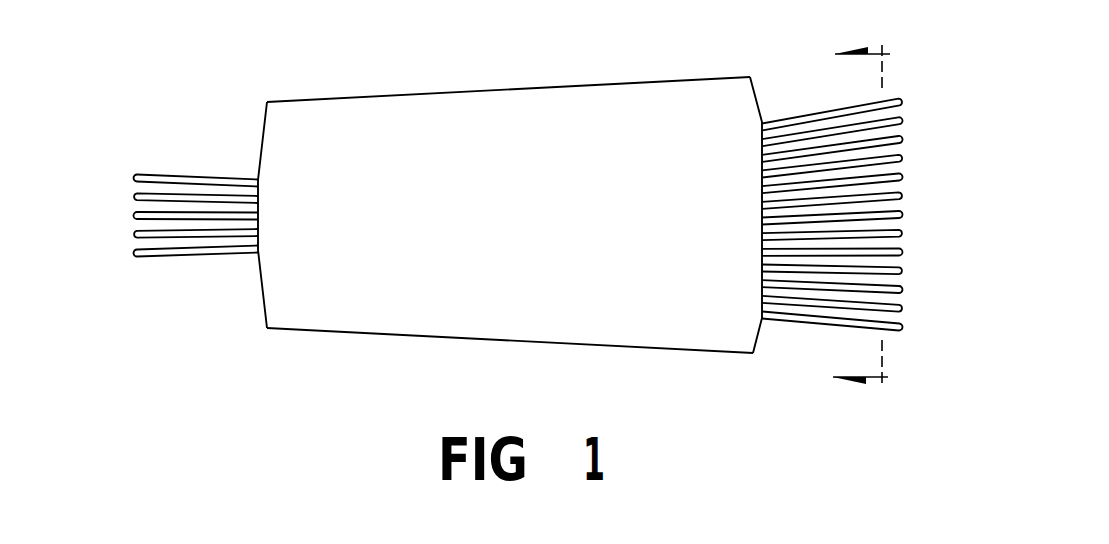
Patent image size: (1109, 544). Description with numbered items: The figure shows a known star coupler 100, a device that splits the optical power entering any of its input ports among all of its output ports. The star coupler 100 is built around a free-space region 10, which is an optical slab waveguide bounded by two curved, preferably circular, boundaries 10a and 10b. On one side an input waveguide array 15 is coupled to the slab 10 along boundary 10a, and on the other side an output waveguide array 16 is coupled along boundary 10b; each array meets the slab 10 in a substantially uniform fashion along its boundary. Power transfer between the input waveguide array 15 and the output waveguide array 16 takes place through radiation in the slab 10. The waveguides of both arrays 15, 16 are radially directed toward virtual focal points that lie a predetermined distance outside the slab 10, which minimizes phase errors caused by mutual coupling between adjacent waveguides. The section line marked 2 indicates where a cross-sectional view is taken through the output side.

The star coupler 100 is at (253, 44).
The free-space region 10 is at (537, 226).
The first curved boundary 10a is at (258, 297).
The second curved boundary 10b is at (757, 333).
The input waveguide array 15 is at (122, 164).
The output waveguide array 16 is at (918, 85).
The section line for FIG. 2 is at (861, 214).